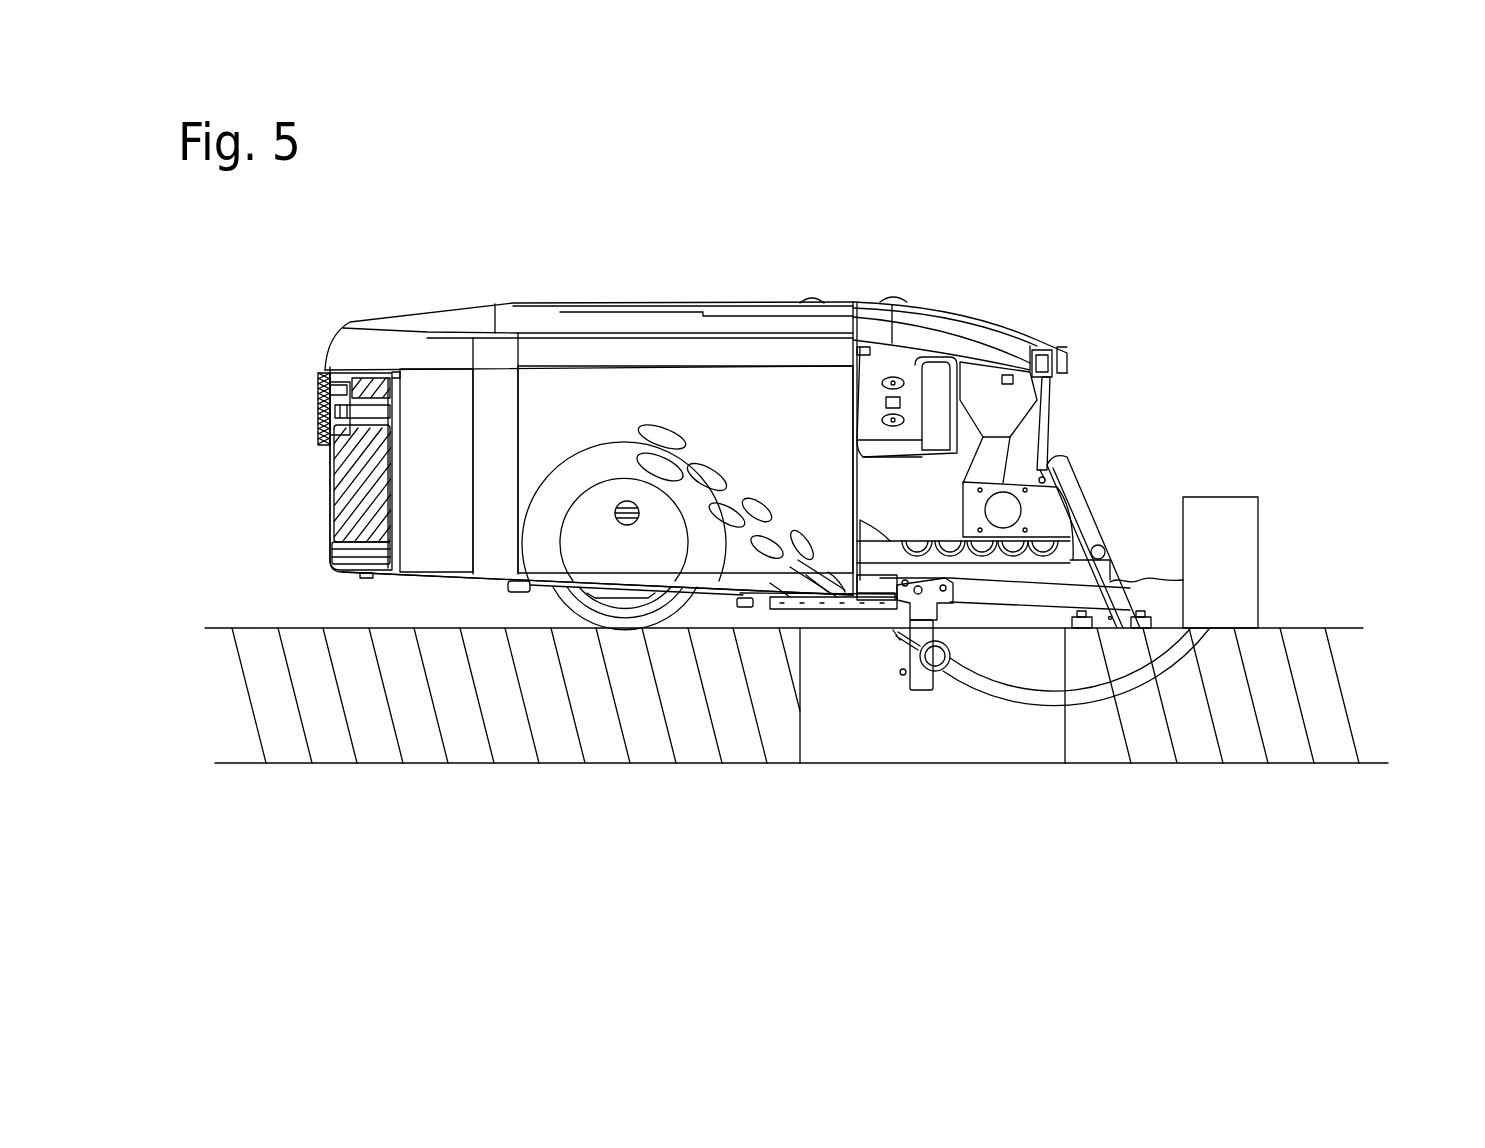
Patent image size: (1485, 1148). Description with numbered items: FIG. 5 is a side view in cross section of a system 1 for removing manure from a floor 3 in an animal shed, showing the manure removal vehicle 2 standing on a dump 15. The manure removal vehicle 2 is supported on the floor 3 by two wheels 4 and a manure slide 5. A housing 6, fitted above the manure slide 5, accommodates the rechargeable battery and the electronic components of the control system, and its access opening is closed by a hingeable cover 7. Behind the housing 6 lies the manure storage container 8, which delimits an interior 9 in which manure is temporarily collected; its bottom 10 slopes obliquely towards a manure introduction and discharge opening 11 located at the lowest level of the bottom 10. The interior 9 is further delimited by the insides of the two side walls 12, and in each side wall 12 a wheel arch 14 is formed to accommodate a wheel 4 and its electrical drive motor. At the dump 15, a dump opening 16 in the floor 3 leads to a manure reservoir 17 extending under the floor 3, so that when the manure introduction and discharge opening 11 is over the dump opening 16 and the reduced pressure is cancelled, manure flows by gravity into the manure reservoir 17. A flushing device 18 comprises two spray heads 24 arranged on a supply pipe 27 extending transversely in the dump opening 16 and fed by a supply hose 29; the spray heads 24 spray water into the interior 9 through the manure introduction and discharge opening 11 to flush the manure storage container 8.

The system for removing manure 1 is at (1095, 285).
The manure removal vehicle 2 is at (930, 295).
The floor 3 is at (255, 627).
The wheel 4 is at (575, 600).
The manure slide 5 is at (757, 600).
The housing 6 is at (1048, 407).
The hingeable cover 7 is at (1002, 322).
The manure storage container 8 is at (433, 428).
The interior 9 is at (690, 408).
The bottom 10 is at (464, 574).
The manure introduction and discharge opening 11 is at (827, 605).
The side wall 12 is at (412, 535).
The wheel arch 14 is at (705, 573).
The dump 15 is at (1103, 498).
The dump opening 16 is at (1030, 722).
The manure reservoir 17 is at (925, 878).
The flushing device 18 is at (1267, 555).
The spray head 24 is at (905, 650).
The supply pipe 27 is at (943, 667).
The supply hose 29 is at (1132, 683).